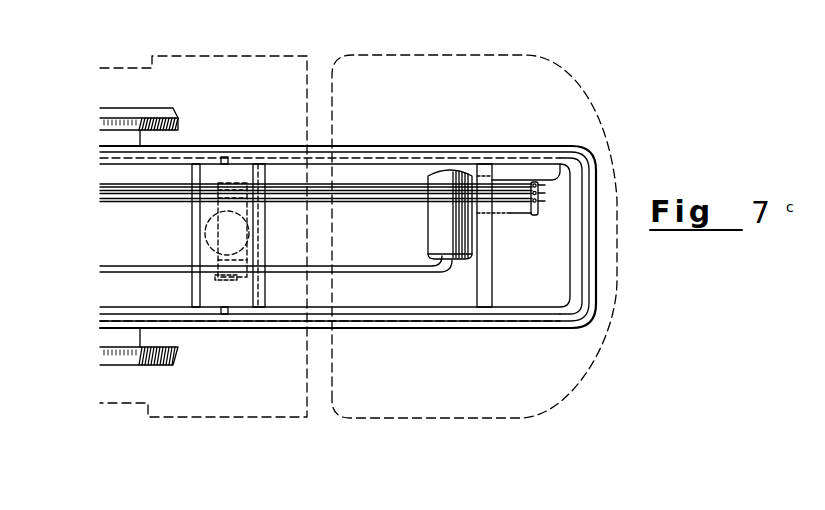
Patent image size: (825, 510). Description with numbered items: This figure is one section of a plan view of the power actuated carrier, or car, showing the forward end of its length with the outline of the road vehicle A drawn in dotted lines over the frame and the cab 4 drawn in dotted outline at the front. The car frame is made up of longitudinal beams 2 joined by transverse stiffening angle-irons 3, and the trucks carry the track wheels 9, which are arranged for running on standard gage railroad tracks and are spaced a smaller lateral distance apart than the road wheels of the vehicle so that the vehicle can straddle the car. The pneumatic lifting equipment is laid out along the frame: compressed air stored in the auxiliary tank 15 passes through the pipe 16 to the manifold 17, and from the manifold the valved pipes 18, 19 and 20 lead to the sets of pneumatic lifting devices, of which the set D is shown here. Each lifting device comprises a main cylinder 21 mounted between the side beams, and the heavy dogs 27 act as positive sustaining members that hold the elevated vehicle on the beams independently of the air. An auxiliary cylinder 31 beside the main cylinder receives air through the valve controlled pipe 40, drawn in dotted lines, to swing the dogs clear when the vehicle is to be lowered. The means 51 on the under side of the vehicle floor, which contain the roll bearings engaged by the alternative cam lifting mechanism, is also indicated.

The road vehicle A is at (122, 66).
The cab 4 is at (585, 88).
The longitudinal beams 2 is at (188, 147).
The valve controlled pipe 40 is at (346, 158).
The wheels 9 is at (174, 357).
The dogs 27 is at (224, 156).
The transverse stiffening angle-irons 3 is at (267, 232).
The cylinder 31 is at (259, 286).
The pneumatic lifting devices D is at (205, 230).
The cylinder 21 is at (205, 239).
The means containing roll bearings 51 is at (224, 288).
The valved pipe 20 is at (333, 193).
The valved pipe 19 is at (390, 192).
The valved pipe 18 is at (387, 203).
The auxiliary tank 15 is at (430, 231).
The manifold 17 is at (539, 214).
The pipe 16 is at (511, 216).